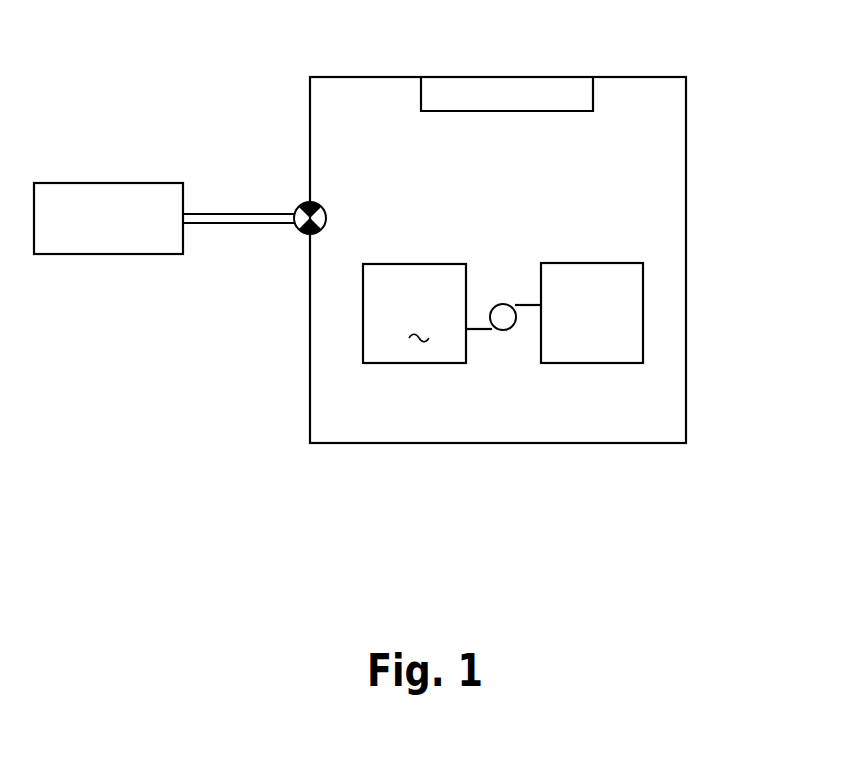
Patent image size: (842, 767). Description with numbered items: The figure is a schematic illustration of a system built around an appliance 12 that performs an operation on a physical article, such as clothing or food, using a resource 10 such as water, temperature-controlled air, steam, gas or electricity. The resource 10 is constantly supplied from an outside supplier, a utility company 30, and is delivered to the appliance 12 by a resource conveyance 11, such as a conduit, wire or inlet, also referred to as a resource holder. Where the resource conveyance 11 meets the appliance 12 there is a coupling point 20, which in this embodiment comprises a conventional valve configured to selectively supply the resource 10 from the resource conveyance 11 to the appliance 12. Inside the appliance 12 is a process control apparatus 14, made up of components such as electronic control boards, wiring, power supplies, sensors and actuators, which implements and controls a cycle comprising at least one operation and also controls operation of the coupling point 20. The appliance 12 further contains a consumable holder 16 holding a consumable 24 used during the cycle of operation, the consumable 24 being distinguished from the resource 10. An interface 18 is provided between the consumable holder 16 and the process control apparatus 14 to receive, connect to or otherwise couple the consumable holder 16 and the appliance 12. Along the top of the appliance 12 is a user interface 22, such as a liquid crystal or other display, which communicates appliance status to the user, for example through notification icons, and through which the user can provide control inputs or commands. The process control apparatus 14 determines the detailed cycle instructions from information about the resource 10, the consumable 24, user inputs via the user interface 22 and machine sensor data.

The utility company 30 is at (122, 183).
The resource conveyance 11 is at (222, 212).
The resource 10 is at (253, 218).
The coupling point 20 is at (299, 230).
The appliance 12 is at (690, 115).
The user interface 22 is at (468, 92).
The consumable holder 16 is at (387, 364).
The consumable 24 is at (421, 327).
The interface 18 is at (509, 331).
The process control apparatus 14 is at (589, 364).